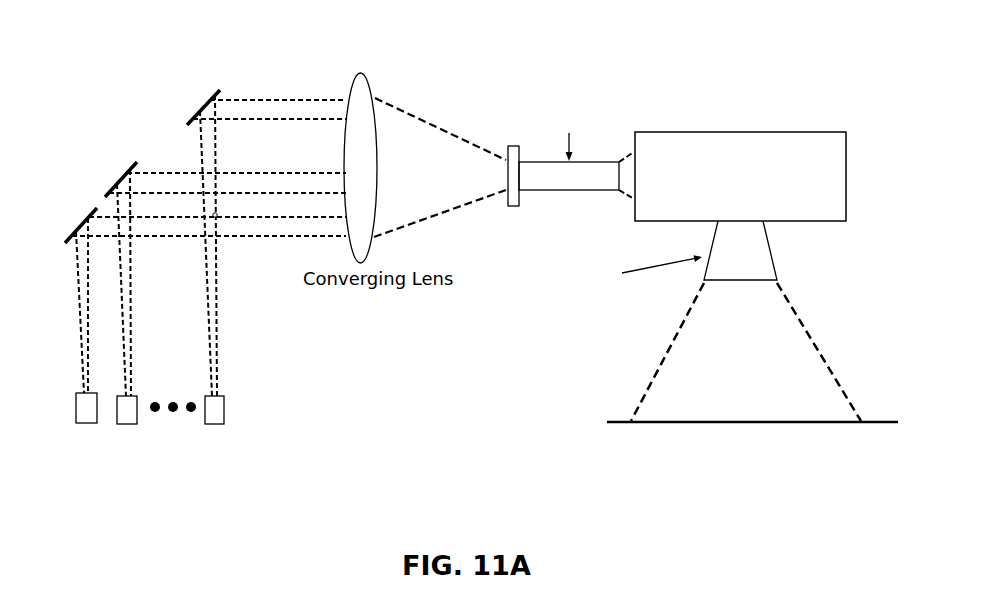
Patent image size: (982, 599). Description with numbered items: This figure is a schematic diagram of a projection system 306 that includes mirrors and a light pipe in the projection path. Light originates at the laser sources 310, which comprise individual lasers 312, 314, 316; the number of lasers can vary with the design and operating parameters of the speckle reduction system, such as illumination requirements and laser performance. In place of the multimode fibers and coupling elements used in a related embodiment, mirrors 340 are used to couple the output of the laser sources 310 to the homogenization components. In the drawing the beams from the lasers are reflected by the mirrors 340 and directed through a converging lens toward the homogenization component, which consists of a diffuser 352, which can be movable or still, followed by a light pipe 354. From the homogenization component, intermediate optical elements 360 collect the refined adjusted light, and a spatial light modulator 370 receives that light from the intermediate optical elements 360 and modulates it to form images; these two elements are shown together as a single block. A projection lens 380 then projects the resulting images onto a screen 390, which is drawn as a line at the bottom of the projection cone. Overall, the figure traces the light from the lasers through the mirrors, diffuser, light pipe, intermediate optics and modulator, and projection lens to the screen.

The projection system 306 is at (660, 56).
The laser sources 310 is at (192, 425).
The laser 312 is at (80, 401).
The laser 314 is at (118, 410).
The laser 316 is at (222, 407).
The mirrors 340 is at (124, 93).
The diffuser 352 is at (507, 200).
The light pipe 354 is at (540, 164).
The intermediate optical elements 360 is at (820, 137).
The spatial light modulator 370 is at (837, 202).
The projection lens 380 is at (765, 257).
The screen 390 is at (885, 402).